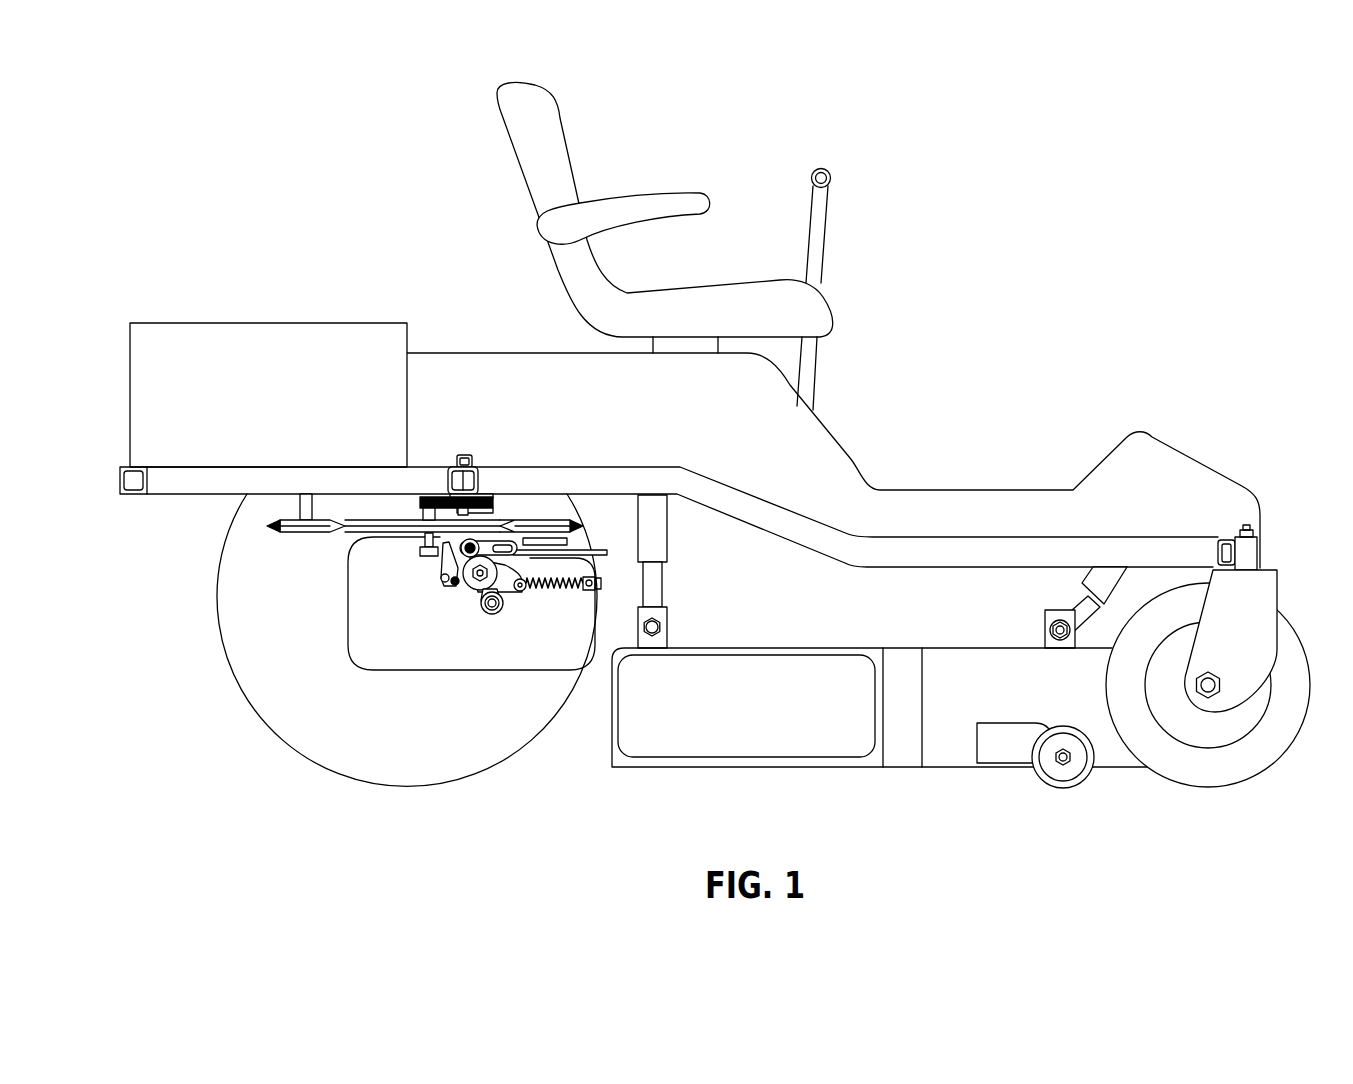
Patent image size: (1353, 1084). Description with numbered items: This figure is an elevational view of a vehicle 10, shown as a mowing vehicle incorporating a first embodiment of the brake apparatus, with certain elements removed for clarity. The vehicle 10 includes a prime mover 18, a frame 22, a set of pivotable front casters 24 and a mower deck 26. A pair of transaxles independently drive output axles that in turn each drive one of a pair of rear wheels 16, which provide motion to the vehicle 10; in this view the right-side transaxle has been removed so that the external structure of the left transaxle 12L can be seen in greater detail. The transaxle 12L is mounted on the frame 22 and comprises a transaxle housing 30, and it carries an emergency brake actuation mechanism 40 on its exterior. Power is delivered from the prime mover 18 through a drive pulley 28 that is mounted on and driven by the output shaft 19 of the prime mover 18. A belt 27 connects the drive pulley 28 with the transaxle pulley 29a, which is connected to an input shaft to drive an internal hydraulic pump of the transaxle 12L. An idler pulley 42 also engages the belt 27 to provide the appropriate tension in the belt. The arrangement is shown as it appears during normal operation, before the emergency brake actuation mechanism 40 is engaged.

The vehicle 10 is at (1081, 224).
The transaxle 12L is at (412, 640).
The wheel 16 is at (419, 741).
The prime mover 18 is at (284, 394).
The output shaft 19 is at (300, 505).
The frame 22 is at (383, 467).
The front caster 24 is at (1224, 777).
The mower deck 26 is at (1010, 692).
The belt 27 is at (358, 533).
The drive pulley 28 is at (290, 533).
The transaxle pulley 29a is at (540, 520).
The transaxle housing 30 is at (429, 637).
The emergency brake actuation mechanism 40 is at (520, 601).
The idler pulley 42 is at (417, 515).